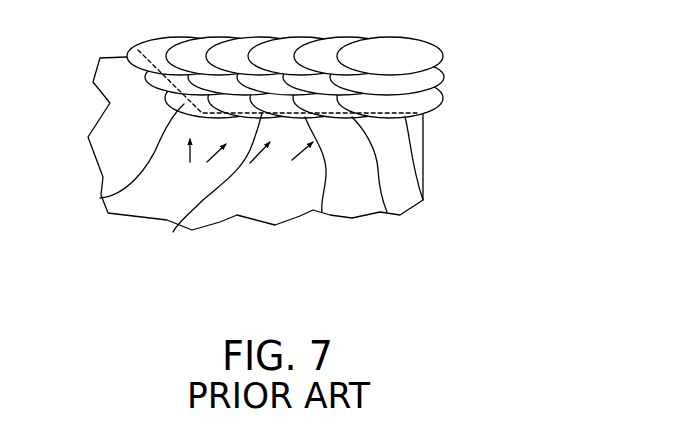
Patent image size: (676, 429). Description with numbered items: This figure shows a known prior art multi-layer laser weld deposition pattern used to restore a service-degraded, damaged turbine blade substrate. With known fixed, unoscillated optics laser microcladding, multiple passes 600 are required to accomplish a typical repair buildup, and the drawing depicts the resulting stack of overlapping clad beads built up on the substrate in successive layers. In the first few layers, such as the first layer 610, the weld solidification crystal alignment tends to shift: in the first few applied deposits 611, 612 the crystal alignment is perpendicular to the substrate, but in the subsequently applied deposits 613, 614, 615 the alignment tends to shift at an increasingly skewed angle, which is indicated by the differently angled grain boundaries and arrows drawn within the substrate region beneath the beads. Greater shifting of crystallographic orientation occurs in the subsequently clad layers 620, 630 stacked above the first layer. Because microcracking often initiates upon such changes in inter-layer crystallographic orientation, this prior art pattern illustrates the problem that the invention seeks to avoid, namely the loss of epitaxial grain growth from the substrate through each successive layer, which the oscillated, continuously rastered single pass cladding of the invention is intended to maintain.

The multiple passes 600 is at (446, 183).
The first layer 610 is at (453, 106).
The subsequently clad layer 620 is at (455, 79).
The subsequently clad layer 630 is at (438, 33).
The first applied deposit 611 is at (100, 198).
The first applied deposit 612 is at (173, 232).
The subsequently applied deposit 613 is at (322, 212).
The subsequently applied deposit 614 is at (387, 212).
The subsequently applied deposit 615 is at (423, 200).